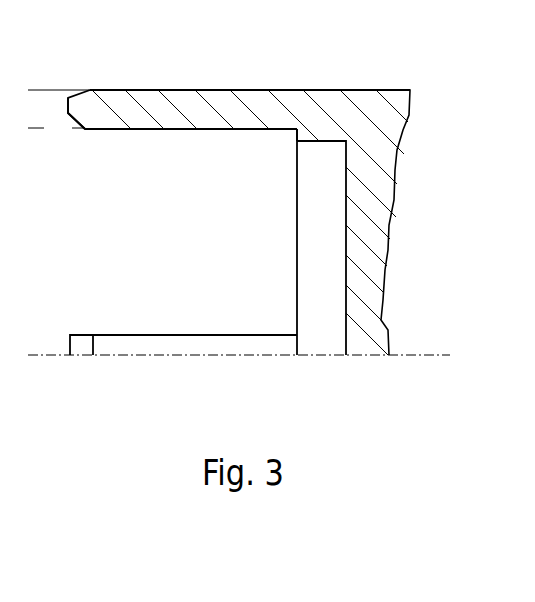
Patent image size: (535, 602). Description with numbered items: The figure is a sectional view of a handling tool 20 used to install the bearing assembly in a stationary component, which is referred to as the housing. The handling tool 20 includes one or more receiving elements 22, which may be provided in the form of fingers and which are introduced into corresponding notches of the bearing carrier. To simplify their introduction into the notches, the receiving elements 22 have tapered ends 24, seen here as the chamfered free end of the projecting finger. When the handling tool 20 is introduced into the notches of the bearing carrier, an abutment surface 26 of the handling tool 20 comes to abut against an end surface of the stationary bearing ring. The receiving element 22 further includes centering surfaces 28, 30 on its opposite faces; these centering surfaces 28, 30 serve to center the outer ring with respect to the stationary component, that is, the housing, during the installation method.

The handling tool 20 is at (362, 317).
The receiving element 22 is at (107, 108).
The tapered end 24 is at (82, 129).
The abutment surface 26 is at (295, 137).
The centering surface 28 is at (242, 128).
The centering surface 30 is at (220, 89).